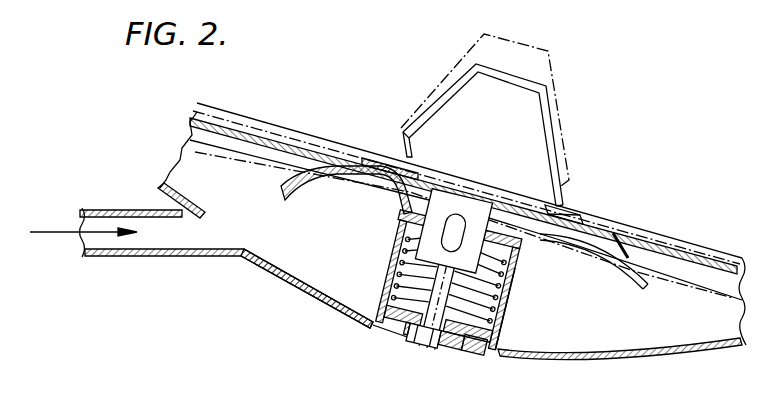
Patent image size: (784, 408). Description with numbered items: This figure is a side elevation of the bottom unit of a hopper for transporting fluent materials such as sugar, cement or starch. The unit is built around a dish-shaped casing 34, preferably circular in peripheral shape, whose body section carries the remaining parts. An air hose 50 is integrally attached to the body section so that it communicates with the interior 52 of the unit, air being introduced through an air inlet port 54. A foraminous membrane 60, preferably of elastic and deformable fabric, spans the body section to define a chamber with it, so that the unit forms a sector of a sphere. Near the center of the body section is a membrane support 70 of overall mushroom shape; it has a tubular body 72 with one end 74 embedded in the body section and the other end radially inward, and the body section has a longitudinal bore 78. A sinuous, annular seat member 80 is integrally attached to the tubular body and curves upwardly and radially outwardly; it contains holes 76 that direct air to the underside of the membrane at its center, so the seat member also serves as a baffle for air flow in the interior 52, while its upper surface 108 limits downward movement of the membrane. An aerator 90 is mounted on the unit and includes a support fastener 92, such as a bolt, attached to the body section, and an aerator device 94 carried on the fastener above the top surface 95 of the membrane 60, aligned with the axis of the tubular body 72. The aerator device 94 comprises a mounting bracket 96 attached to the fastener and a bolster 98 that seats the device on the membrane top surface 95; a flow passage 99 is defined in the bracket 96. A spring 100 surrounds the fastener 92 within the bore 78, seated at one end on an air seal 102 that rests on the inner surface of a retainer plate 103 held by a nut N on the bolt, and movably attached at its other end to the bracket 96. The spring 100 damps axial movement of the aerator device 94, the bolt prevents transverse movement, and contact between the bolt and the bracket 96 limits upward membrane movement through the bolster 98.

The dish-shaped casing 34 is at (270, 275).
The air hose 50 is at (165, 259).
The interior of the bottom unit 52 is at (310, 241).
The air inlet port 54 is at (212, 229).
The foraminous membrane 60 is at (249, 137).
The membrane support 70 is at (556, 218).
The tubular body 72 is at (386, 261).
The end of tubular body 74 is at (516, 356).
The holes 76 is at (562, 248).
The bore 78 is at (502, 318).
The sinuous annular seat member 80 is at (621, 243).
The aerator 90 is at (576, 126).
The support fastener 92 is at (418, 352).
The aerator device 94 is at (541, 83).
The top surface of the membrane 95 is at (703, 261).
The mounting bracket 96 is at (452, 203).
The bolster 98 is at (377, 160).
The flow passage 99 is at (467, 228).
The spring 100 is at (516, 272).
The air seal 102 is at (505, 350).
The retainer plate 103 is at (464, 352).
The upper surface of the seat member 108 is at (282, 182).
The nut N is at (430, 353).